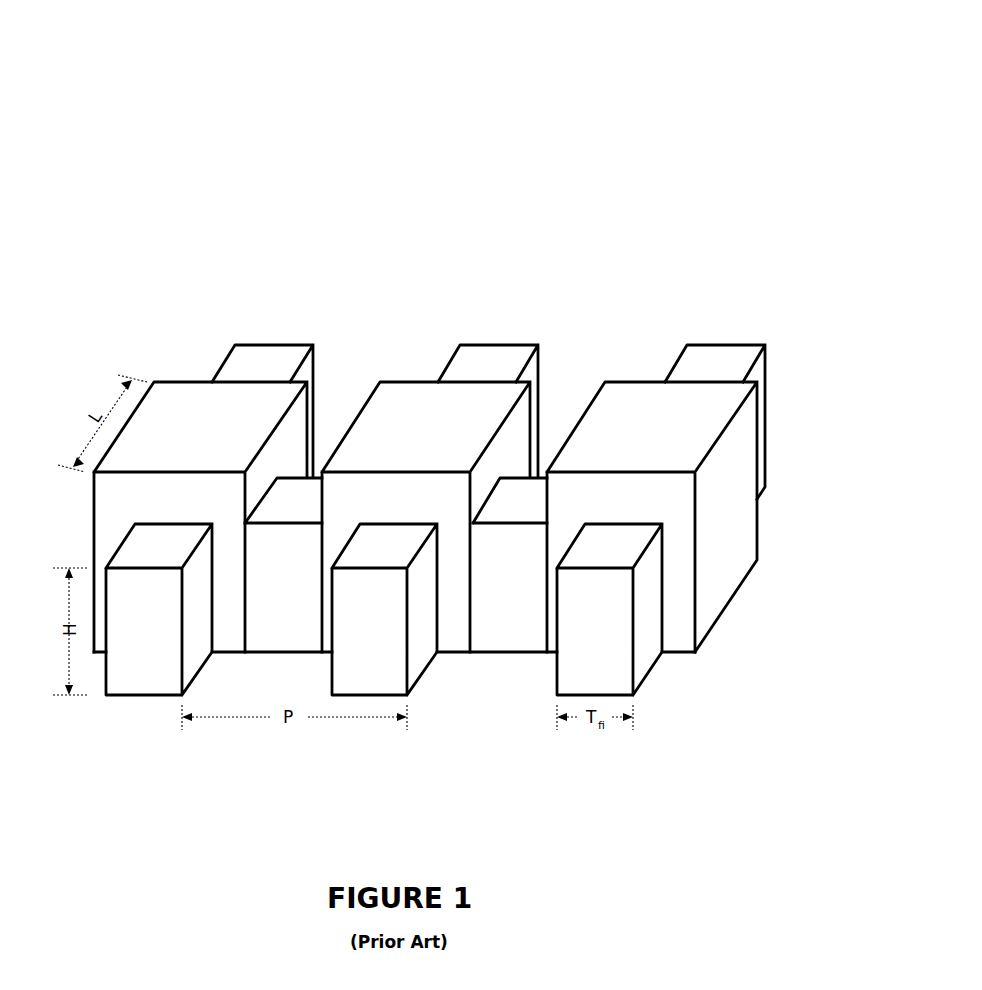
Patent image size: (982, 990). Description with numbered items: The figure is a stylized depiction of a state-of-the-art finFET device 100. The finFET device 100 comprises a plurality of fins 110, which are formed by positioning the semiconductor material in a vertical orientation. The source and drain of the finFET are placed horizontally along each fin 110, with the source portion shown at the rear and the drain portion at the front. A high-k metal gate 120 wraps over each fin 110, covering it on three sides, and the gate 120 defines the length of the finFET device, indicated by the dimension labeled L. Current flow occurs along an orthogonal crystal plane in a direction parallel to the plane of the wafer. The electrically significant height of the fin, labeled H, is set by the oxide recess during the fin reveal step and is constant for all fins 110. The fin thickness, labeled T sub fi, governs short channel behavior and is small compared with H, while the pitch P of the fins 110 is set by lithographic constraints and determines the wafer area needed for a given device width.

The finFET device 100 is at (727, 80).
The fins 110 is at (277, 343).
The high-k metal gate 120 is at (365, 393).